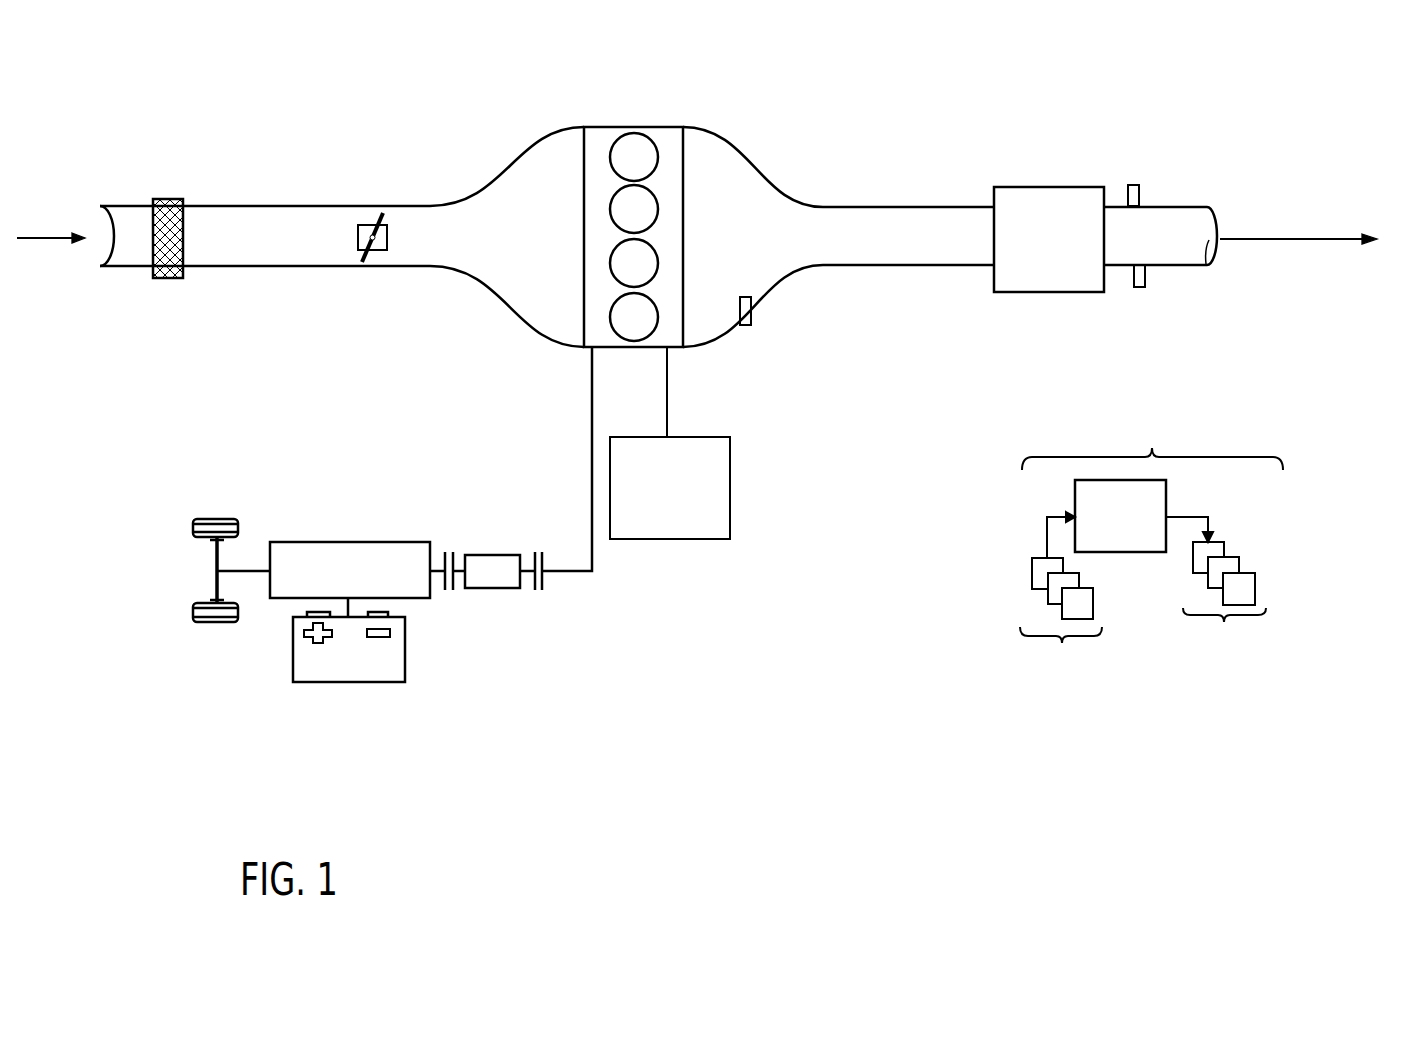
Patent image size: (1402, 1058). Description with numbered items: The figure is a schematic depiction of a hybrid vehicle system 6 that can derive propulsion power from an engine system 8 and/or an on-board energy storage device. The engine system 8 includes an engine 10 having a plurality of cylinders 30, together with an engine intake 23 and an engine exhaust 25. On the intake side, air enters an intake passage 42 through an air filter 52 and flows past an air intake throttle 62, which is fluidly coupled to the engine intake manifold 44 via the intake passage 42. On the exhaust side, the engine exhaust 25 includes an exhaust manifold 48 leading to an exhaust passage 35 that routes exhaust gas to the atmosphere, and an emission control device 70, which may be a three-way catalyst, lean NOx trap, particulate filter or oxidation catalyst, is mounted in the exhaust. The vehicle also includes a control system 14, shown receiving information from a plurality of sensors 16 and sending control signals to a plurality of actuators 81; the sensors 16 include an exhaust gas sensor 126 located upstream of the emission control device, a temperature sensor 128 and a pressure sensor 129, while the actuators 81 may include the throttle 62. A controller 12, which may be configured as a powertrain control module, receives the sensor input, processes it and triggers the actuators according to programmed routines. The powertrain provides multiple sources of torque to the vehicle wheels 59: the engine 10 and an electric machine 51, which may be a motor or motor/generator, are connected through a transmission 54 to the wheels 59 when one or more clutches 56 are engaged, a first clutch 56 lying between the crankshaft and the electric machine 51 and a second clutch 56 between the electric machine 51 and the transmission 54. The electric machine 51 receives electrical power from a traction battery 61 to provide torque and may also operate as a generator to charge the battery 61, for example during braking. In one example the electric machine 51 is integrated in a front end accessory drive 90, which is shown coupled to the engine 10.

The hybrid vehicle system 6 is at (113, 101).
The engine system 8 is at (1248, 96).
The engine 10 is at (683, 218).
The controller 12 is at (1120, 516).
The control system 14 is at (1152, 437).
The sensors 16 is at (1061, 597).
The engine intake 23 is at (502, 148).
The engine exhaust 25 is at (804, 158).
The cylinders 30 is at (657, 150).
The exhaust passage 35 is at (1187, 206).
The intake passage 42 is at (132, 267).
The engine intake manifold 44 is at (550, 249).
The exhaust manifold 48 is at (770, 249).
The electric machine 51 is at (493, 588).
The air filter 52 is at (163, 197).
The transmission 54 is at (293, 598).
The clutches 56 is at (455, 558).
The vehicle wheels 59 is at (215, 623).
The traction battery 61 is at (352, 682).
The air intake throttle 62 is at (387, 242).
The emission control device 70 is at (1033, 187).
The actuators 81 is at (1216, 592).
The front end accessory drive 90 is at (682, 500).
The exhaust gas sensor 126 is at (751, 303).
The temperature sensor 128 is at (1140, 287).
The pressure sensor 129 is at (1133, 185).